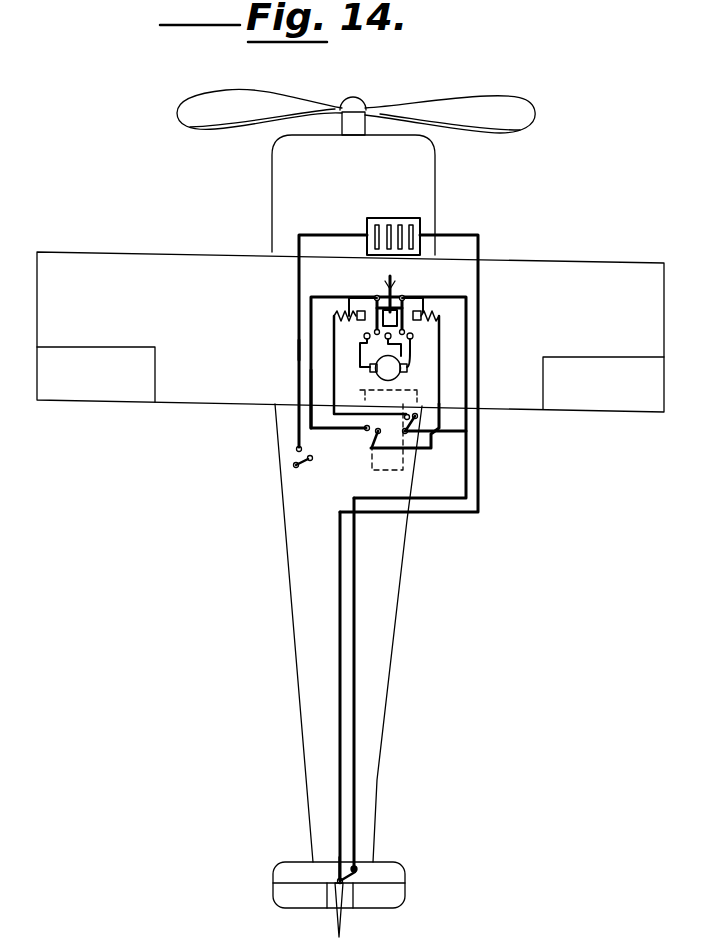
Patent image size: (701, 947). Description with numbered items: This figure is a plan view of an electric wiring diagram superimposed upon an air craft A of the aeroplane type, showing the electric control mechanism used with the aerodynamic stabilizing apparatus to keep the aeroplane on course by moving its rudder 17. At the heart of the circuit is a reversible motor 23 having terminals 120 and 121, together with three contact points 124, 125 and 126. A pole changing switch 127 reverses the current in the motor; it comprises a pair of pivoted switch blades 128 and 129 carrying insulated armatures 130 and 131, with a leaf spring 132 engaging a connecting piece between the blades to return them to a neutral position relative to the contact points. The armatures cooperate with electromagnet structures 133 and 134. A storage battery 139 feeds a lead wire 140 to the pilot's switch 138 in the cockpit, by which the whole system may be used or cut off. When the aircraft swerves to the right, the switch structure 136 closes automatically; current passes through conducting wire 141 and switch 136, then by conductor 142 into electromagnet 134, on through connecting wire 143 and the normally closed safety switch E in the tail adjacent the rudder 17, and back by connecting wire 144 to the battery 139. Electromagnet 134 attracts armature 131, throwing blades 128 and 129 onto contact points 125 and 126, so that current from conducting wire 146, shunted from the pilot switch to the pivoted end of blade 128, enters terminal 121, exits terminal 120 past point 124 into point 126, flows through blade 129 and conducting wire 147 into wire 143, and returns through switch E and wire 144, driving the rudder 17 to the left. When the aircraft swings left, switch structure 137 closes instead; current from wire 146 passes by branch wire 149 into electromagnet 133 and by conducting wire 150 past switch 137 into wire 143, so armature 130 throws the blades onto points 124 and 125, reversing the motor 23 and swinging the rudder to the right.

The air craft A is at (101, 385).
The safety switch device E is at (403, 873).
The rudder 17 is at (338, 905).
The motor 23 is at (388, 370).
The terminal 120 is at (369, 377).
The terminal 121 is at (408, 374).
The contact point 124 is at (364, 336).
The contact point 125 is at (386, 339).
The contact point 126 is at (410, 360).
The pole changing switch 127 is at (395, 292).
The switch blade 128 is at (377, 296).
The switch blade 129 is at (405, 300).
The armature 130 is at (349, 298).
The armature 131 is at (413, 337).
The spring 132 is at (388, 292).
The electromagnet structure 133 is at (336, 330).
The electromagnet structure 134 is at (428, 312).
The switch structure 136 is at (373, 440).
The switch structure 137 is at (412, 445).
The switch structure 138 is at (296, 466).
The storage battery 139 is at (391, 227).
The lead wire 140 is at (298, 278).
The conducting wire 141 is at (340, 430).
The wire or conductor 142 is at (438, 410).
The connecting wire 143 is at (340, 588).
The connecting wire 144 is at (354, 655).
The conducting wire 146 is at (311, 383).
The conducting wire 147 is at (407, 298).
The branch wire 149 is at (352, 312).
The conducting wire 150 is at (299, 356).